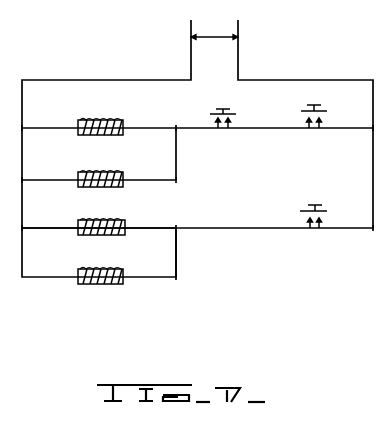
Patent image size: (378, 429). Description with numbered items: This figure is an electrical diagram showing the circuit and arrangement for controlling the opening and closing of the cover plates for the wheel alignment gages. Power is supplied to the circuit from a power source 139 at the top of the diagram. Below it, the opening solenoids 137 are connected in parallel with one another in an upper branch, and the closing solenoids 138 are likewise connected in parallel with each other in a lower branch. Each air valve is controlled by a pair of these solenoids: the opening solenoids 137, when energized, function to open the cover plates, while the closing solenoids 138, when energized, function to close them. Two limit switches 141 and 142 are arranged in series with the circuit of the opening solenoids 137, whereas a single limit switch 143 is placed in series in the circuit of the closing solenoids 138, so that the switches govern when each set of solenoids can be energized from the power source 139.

The opening solenoids 137 is at (75, 123).
The closing solenoids 138 is at (127, 227).
The power source 139 is at (222, 50).
The limit switch 141 is at (322, 113).
The limit switch 142 is at (236, 116).
The limit switch 143 is at (322, 209).